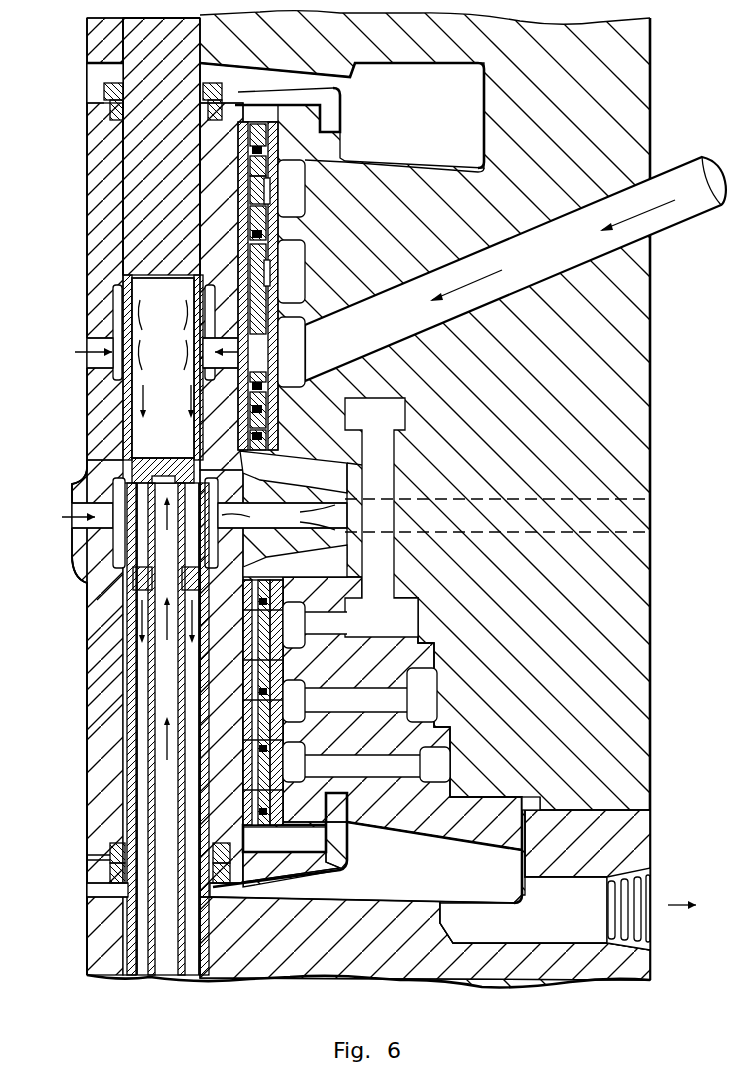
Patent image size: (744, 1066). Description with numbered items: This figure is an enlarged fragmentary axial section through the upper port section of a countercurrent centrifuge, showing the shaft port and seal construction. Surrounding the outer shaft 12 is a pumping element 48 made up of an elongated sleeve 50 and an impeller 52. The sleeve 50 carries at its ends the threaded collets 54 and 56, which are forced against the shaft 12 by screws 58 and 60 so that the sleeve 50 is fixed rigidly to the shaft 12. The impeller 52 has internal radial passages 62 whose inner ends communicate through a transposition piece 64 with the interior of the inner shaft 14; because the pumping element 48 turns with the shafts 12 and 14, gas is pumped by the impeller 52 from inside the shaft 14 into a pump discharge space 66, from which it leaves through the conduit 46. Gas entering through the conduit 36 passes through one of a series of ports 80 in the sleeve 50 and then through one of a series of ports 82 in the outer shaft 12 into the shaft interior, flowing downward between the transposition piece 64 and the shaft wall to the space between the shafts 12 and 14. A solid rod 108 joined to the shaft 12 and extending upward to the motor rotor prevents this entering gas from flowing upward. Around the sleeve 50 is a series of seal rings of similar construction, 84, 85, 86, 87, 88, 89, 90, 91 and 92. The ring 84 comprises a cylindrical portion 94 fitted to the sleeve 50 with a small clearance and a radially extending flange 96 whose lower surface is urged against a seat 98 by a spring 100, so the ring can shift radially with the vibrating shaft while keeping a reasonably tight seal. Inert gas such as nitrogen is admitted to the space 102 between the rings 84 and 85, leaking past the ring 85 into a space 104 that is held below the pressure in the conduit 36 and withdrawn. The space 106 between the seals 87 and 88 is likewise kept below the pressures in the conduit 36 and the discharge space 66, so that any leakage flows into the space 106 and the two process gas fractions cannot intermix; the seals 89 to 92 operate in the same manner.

The outer shaft 12 is at (133, 748).
The inner shaft 14 is at (150, 807).
The conduit 36 is at (662, 232).
The conduit 46 is at (582, 500).
The pumping element 48 is at (88, 603).
The sleeve 50 is at (113, 677).
The impeller 52 is at (74, 553).
The threaded collet 54 is at (112, 860).
The threaded collet 56 is at (110, 112).
The screw 58 is at (112, 877).
The screw 60 is at (108, 80).
The internal radial passages 62 is at (78, 507).
The transposition piece 64 is at (161, 462).
The pump discharge space 66 is at (340, 556).
The ports 80 is at (88, 347).
The ports 82 is at (128, 313).
The seal ring 84 is at (247, 147).
The seal ring 85 is at (245, 200).
The seal ring 86 is at (268, 277).
The seal ring 87 is at (268, 390).
The seal ring 88 is at (268, 447).
The seal ring 89 is at (330, 583).
The seal ring 90 is at (294, 642).
The seal ring 91 is at (272, 720).
The seal ring 92 is at (268, 783).
The cylindrical portion 94 is at (247, 142).
The radially extending flange 96 is at (266, 168).
The seat 98 is at (268, 162).
The spring 100 is at (261, 165).
The space 102 is at (296, 207).
The space 104 is at (293, 247).
The space 106 is at (268, 413).
The solid rod 108 is at (142, 200).